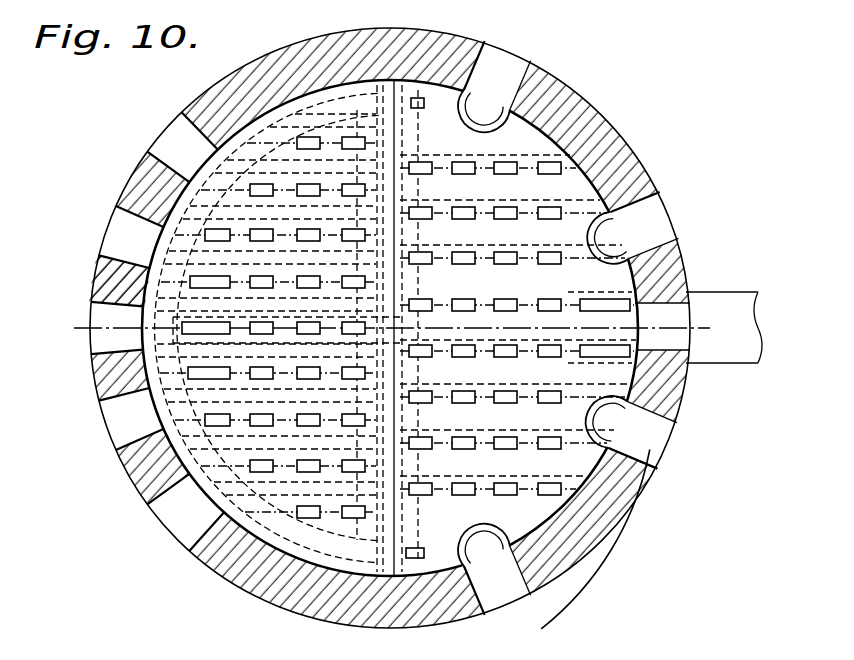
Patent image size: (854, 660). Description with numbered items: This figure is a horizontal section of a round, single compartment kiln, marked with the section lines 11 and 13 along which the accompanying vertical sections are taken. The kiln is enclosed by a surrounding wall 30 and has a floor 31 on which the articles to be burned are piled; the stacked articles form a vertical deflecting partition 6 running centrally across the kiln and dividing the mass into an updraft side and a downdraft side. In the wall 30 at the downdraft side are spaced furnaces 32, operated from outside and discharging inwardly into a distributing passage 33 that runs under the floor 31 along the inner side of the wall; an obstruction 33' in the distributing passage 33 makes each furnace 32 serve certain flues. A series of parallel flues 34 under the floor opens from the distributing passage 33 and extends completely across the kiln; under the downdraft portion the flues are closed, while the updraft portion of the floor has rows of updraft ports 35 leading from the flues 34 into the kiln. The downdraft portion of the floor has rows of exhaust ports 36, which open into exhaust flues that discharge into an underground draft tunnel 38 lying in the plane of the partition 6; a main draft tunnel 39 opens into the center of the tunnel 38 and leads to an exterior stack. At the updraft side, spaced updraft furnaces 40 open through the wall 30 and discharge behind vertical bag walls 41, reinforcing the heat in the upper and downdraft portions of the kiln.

The deflecting partition 6 is at (362, 82).
The section line 11— 11 is at (165, 428).
The section line 13— 13 is at (389, 330).
The surrounding wall 30 is at (608, 514).
The floor 31 is at (565, 560).
The furnaces 32 is at (167, 137).
The distributing passage 33 is at (390, 328).
The obstruction 33' is at (90, 280).
The parallel flues 34 is at (207, 100).
The updraft ports 35 is at (504, 256).
The exhaust ports 36 is at (190, 453).
The draft tunnel 38 is at (405, 533).
The main draft tunnel 39 is at (726, 357).
The updraft furnaces 40 is at (507, 72).
The bag walls 41 is at (487, 123).